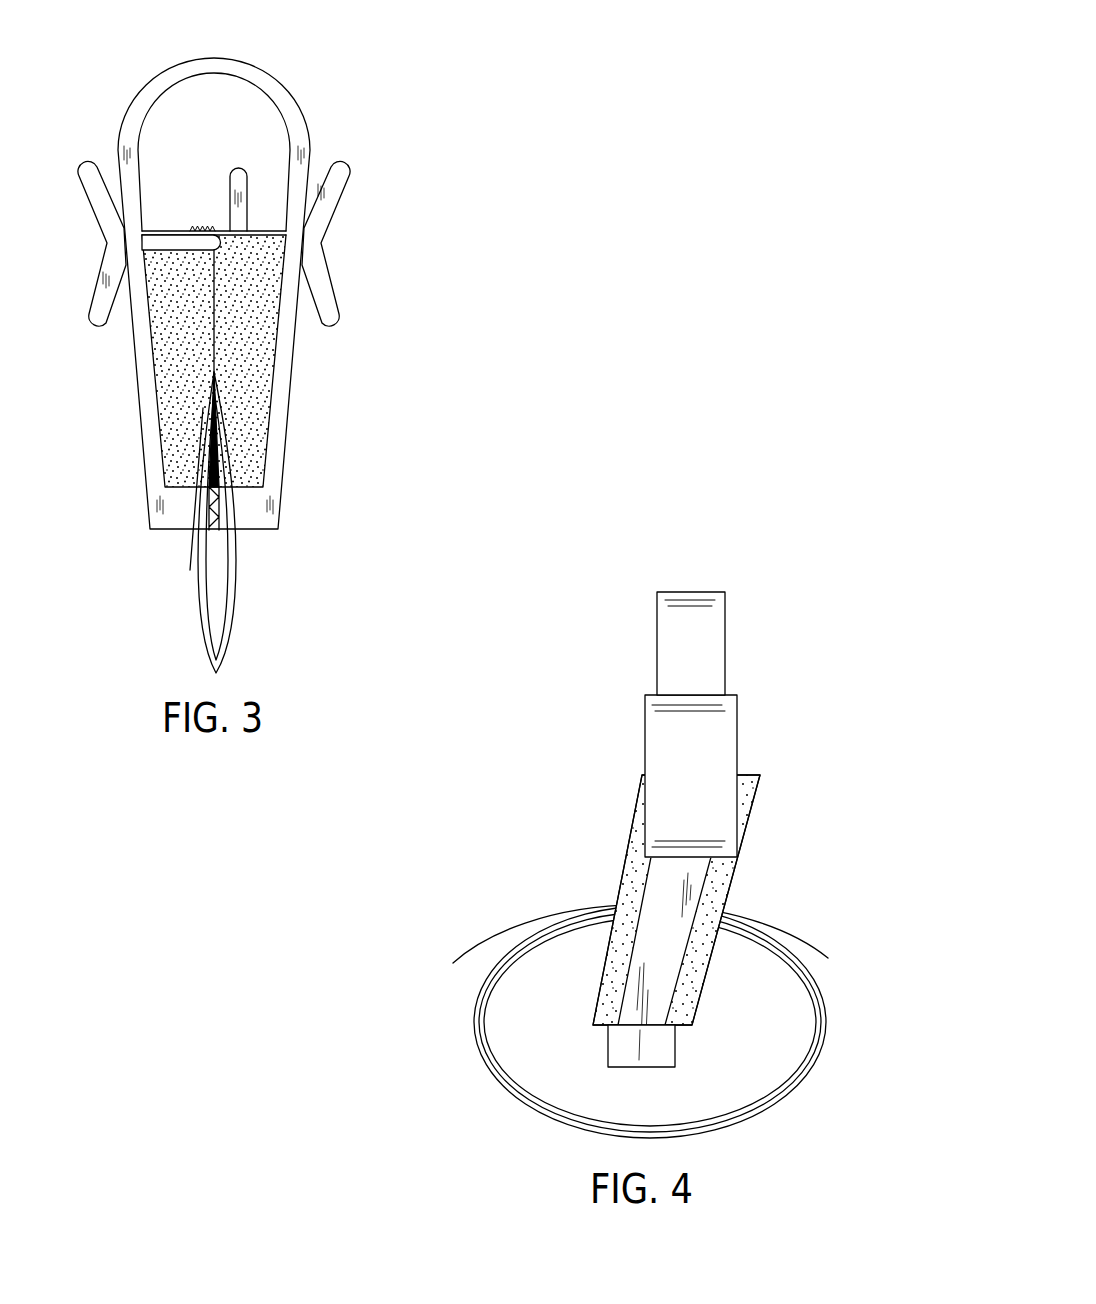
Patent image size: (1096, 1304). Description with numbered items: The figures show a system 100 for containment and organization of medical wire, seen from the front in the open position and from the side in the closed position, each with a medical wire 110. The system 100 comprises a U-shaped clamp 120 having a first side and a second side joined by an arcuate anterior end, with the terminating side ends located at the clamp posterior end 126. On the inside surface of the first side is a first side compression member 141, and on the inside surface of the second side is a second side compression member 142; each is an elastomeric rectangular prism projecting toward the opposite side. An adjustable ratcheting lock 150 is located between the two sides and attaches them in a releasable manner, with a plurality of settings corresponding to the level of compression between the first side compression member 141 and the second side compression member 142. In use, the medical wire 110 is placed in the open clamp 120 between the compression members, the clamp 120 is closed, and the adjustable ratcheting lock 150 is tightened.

In FIG. 3, the system 100 is at (368, 108).
In FIG. 4, the system 100 is at (760, 637).
In FIG. 3, the medical wire 110 is at (237, 593).
In FIG. 4, the medical wire 110 is at (478, 1033).
In FIG. 3, the clamp 120 is at (292, 362).
In FIG. 4, the clamp 120 is at (645, 735).
In FIG. 4, the clamp posterior end 126 is at (688, 591).
In FIG. 3, the first side compression member 141 is at (180, 333).
In FIG. 3, the second side compression member 142 is at (250, 393).
In FIG. 3, the adjustable ratcheting lock 150 is at (203, 203).